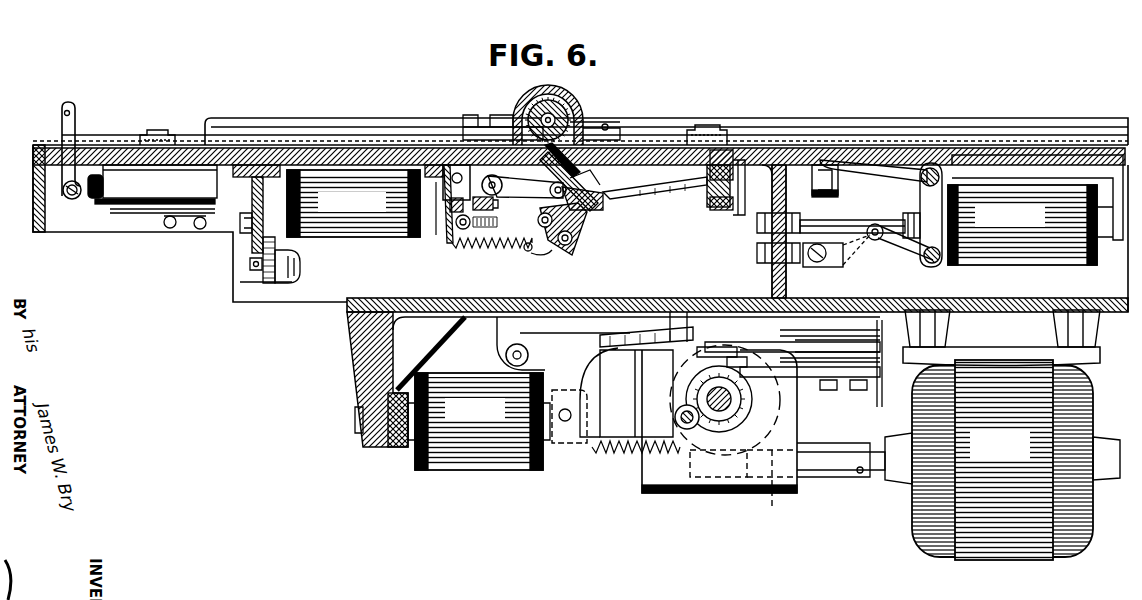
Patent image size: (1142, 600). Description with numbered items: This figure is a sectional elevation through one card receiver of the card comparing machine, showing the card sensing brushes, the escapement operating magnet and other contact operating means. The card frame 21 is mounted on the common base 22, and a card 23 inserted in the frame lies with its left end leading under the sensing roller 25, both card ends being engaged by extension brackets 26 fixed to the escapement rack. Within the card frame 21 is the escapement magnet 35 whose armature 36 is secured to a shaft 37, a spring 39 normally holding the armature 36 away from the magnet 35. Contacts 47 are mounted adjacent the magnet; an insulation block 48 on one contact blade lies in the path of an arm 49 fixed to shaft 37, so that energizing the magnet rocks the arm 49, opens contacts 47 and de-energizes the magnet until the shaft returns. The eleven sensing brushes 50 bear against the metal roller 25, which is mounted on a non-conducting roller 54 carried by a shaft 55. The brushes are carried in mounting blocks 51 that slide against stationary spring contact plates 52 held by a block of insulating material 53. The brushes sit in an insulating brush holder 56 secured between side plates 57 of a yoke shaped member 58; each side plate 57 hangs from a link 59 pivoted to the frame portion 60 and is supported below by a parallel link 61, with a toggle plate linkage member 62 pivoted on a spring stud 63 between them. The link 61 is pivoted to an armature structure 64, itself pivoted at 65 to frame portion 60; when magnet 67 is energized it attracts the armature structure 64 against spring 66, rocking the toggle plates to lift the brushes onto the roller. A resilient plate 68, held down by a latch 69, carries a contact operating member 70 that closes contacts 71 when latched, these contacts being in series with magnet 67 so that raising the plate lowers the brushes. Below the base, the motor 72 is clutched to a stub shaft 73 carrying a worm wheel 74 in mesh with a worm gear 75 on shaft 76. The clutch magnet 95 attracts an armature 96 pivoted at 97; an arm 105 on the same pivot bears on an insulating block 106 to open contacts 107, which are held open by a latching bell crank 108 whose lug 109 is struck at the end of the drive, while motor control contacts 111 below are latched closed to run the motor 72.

The card frame 21 is at (283, 296).
The base 22 is at (570, 298).
The card 23 is at (330, 142).
The sensing roller 25 is at (578, 116).
The extension brackets 26 is at (702, 136).
The magnet 35 is at (1035, 210).
The armature 36 is at (935, 246).
The shaft 37 is at (931, 167).
The spring 39 is at (855, 259).
The contacts 47 is at (815, 172).
The insulation block 48 is at (832, 188).
The arm 49 is at (865, 163).
The sensing brushes 50 is at (602, 148).
The mounting blocks 51 is at (613, 178).
The spring contact plates 52 is at (680, 200).
The block of insulating material 53 is at (704, 212).
The non-conducting roller 54 is at (566, 101).
The shaft 55 is at (598, 132).
The insulating brush holder 56 is at (595, 204).
The side plates 57 is at (597, 212).
The yoke shaped member 58 is at (583, 230).
The link 59 is at (527, 187).
The frame portion 60 is at (522, 174).
The parallel link 61 is at (497, 216).
The toggle plate linkage member 62 is at (568, 256).
The spring stud 63 is at (531, 252).
The armature structure 64 is at (447, 233).
The pivot 65 is at (460, 175).
The spring 66 is at (478, 248).
The magnet 67 is at (365, 201).
The resilient plate 68 is at (258, 133).
The latch 69 is at (70, 112).
The contact operating member 70 is at (106, 186).
The contacts 71 is at (102, 205).
The motor 72 is at (958, 435).
The stub shaft 73 is at (777, 490).
The worm wheel 74 is at (712, 480).
The worm gear 75 is at (780, 425).
The shaft 76 is at (731, 413).
The magnet 95 is at (469, 421).
The armature 96 is at (558, 447).
The pivot 97 is at (505, 352).
The arm 105 is at (646, 340).
The insulating block 106 is at (692, 352).
The contacts 107 is at (742, 347).
The latching bell crank 108 is at (626, 392).
The lug 109 is at (622, 452).
The motor control contacts 111 is at (740, 362).